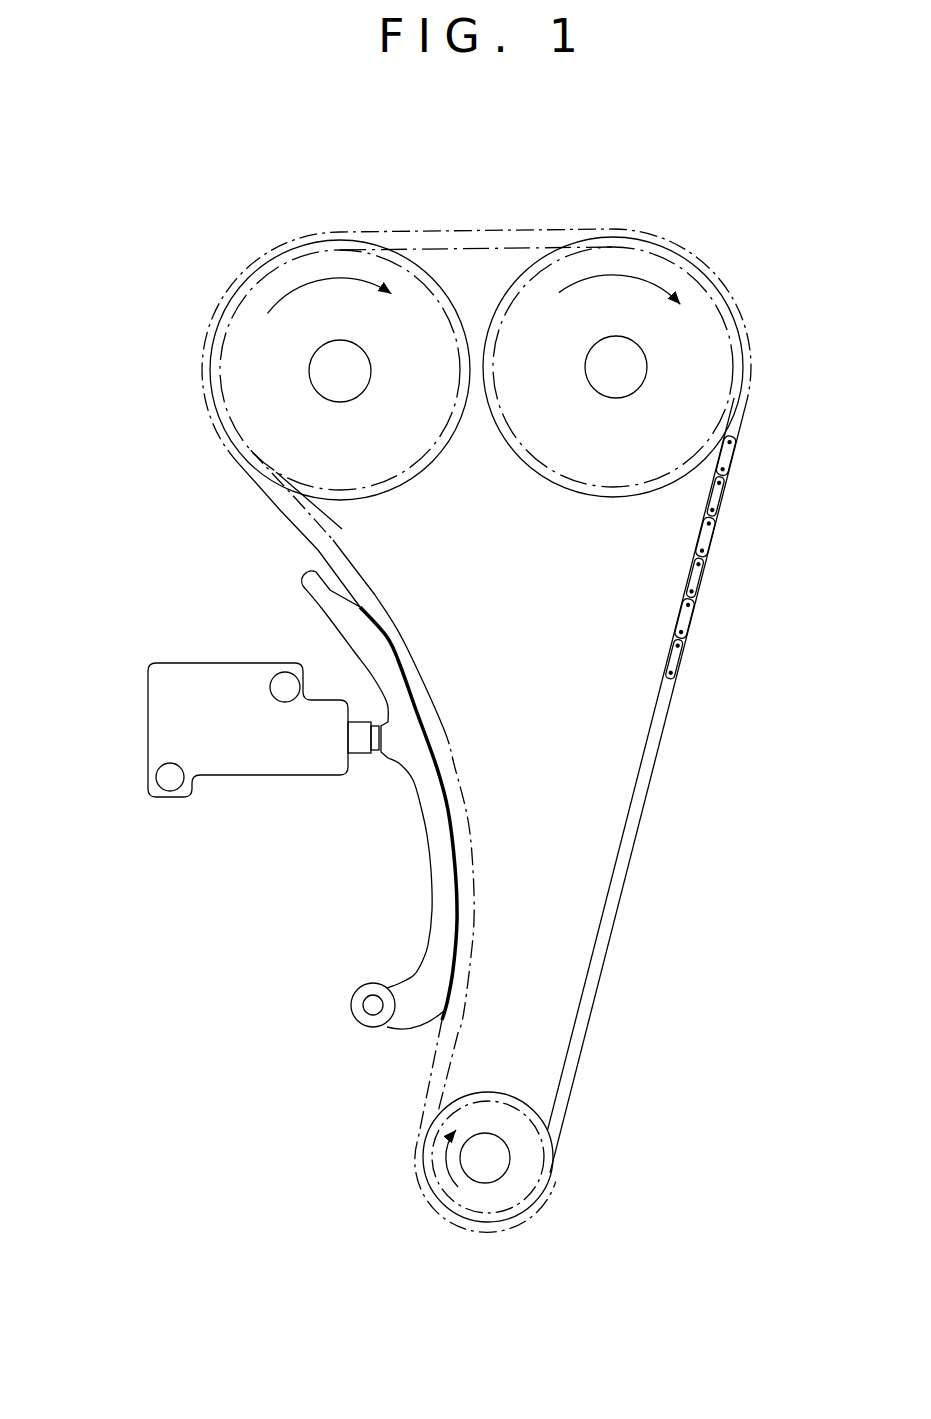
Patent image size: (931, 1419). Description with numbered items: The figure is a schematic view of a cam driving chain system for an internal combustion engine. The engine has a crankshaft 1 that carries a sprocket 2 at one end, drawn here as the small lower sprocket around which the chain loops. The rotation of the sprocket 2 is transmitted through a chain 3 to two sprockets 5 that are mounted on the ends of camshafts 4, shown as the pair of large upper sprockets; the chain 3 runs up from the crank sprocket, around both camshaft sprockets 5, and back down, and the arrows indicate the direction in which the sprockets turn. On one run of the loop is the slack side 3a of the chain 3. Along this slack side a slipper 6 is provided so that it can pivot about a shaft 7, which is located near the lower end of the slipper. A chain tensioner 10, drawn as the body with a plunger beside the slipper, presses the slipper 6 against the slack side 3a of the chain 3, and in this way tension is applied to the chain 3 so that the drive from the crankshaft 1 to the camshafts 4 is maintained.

The crankshaft 1 is at (478, 1172).
The sprocket 2 is at (440, 1158).
The chain 3 is at (479, 730).
The slack side 3a is at (295, 527).
The camshafts 4 is at (352, 386).
The sprockets 5 is at (540, 287).
The slipper 6 is at (432, 862).
The shaft 7 is at (373, 1005).
The chain tensioner 10 is at (150, 660).